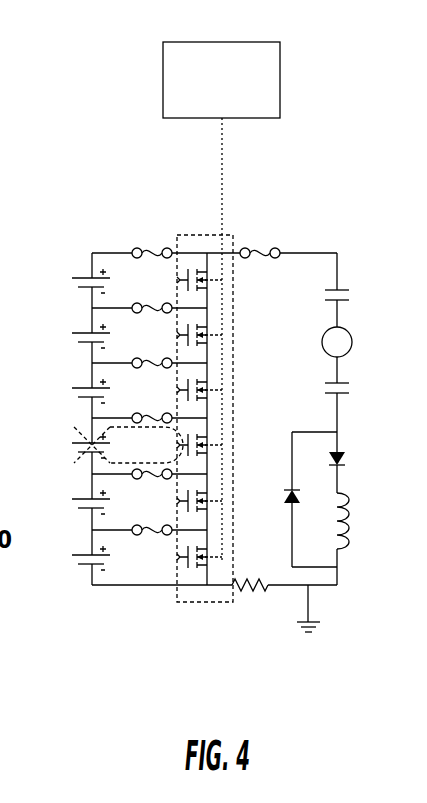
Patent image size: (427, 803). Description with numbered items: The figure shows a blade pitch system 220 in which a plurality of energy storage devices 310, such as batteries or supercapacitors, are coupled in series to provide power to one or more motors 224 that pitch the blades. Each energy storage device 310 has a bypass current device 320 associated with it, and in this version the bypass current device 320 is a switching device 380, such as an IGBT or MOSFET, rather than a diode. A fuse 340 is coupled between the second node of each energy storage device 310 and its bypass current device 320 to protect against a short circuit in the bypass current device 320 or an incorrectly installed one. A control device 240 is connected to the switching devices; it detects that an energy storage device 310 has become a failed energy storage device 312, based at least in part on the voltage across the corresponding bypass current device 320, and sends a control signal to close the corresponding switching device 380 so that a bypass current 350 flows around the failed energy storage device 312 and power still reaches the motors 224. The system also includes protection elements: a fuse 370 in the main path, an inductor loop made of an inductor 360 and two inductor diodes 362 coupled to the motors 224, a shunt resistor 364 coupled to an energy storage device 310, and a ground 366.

The control device 240 is at (281, 79).
The blade pitch system 220 is at (277, 212).
The energy storage devices 310 is at (74, 546).
The fuses 340 is at (140, 408).
The fuse 370 is at (277, 249).
The failed energy storage device 312 is at (116, 431).
The bypass current 350 is at (157, 463).
The bypass current device 320 is at (207, 234).
The switching device 380 is at (214, 560).
The motors 224 is at (347, 353).
The inductor diodes 362 is at (306, 495).
The inductor 360 is at (361, 508).
The shunt resistor 364 is at (248, 595).
The ground 366 is at (322, 633).